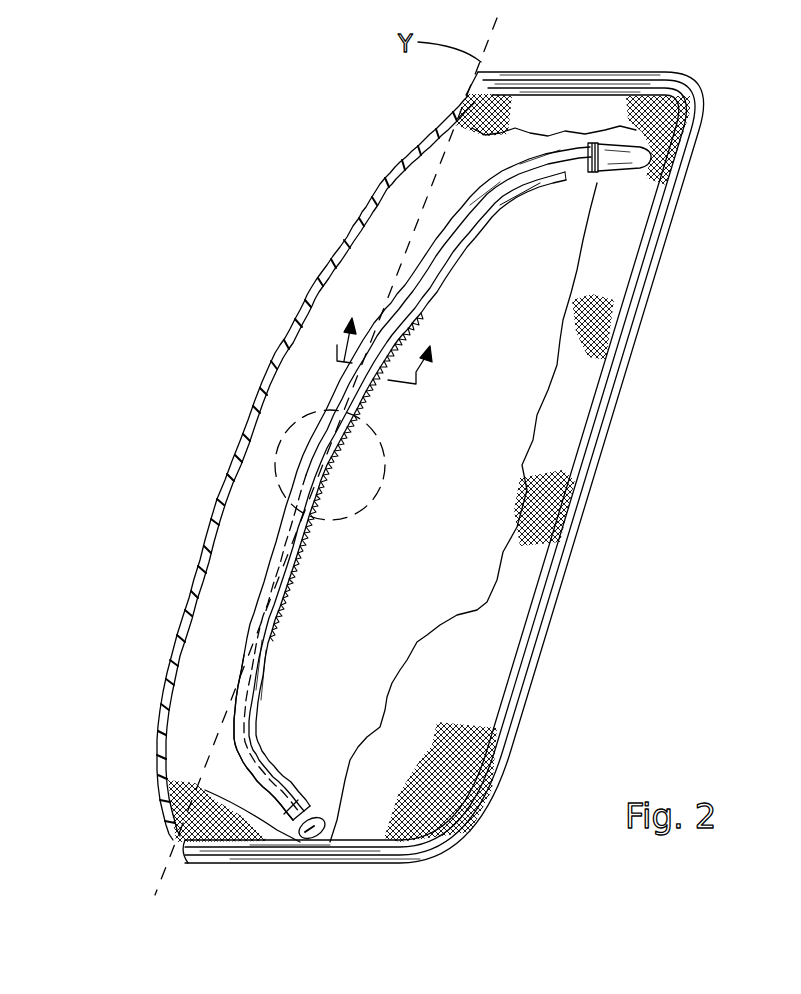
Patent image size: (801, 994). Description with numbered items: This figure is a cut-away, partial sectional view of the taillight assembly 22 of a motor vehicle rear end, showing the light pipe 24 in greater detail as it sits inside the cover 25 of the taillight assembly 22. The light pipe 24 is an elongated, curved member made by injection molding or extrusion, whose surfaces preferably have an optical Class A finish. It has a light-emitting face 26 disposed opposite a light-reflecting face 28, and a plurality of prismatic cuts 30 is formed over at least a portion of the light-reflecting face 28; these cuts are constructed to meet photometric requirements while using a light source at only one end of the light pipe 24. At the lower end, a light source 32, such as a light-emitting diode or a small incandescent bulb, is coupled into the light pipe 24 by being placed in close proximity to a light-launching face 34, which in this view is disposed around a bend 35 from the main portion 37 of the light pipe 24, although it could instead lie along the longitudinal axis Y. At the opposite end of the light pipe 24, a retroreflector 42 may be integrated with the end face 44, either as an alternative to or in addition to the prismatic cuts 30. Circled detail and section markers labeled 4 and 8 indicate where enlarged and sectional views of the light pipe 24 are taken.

The taillight assembly 22 is at (222, 128).
The light pipe 24 is at (490, 192).
The cover 25 is at (277, 360).
The light-emitting face 26 is at (273, 548).
The light-reflecting face 28 is at (275, 548).
The prismatic cuts 30 is at (338, 388).
The light source 32 is at (300, 838).
The light-launching face 34 is at (296, 826).
The bend 35 is at (234, 750).
The main portion 37 is at (248, 633).
The retroreflector 42 is at (672, 133).
The end face 44 is at (627, 152).
The detail section 4 is at (277, 450).
The section line 8 is at (395, 329).